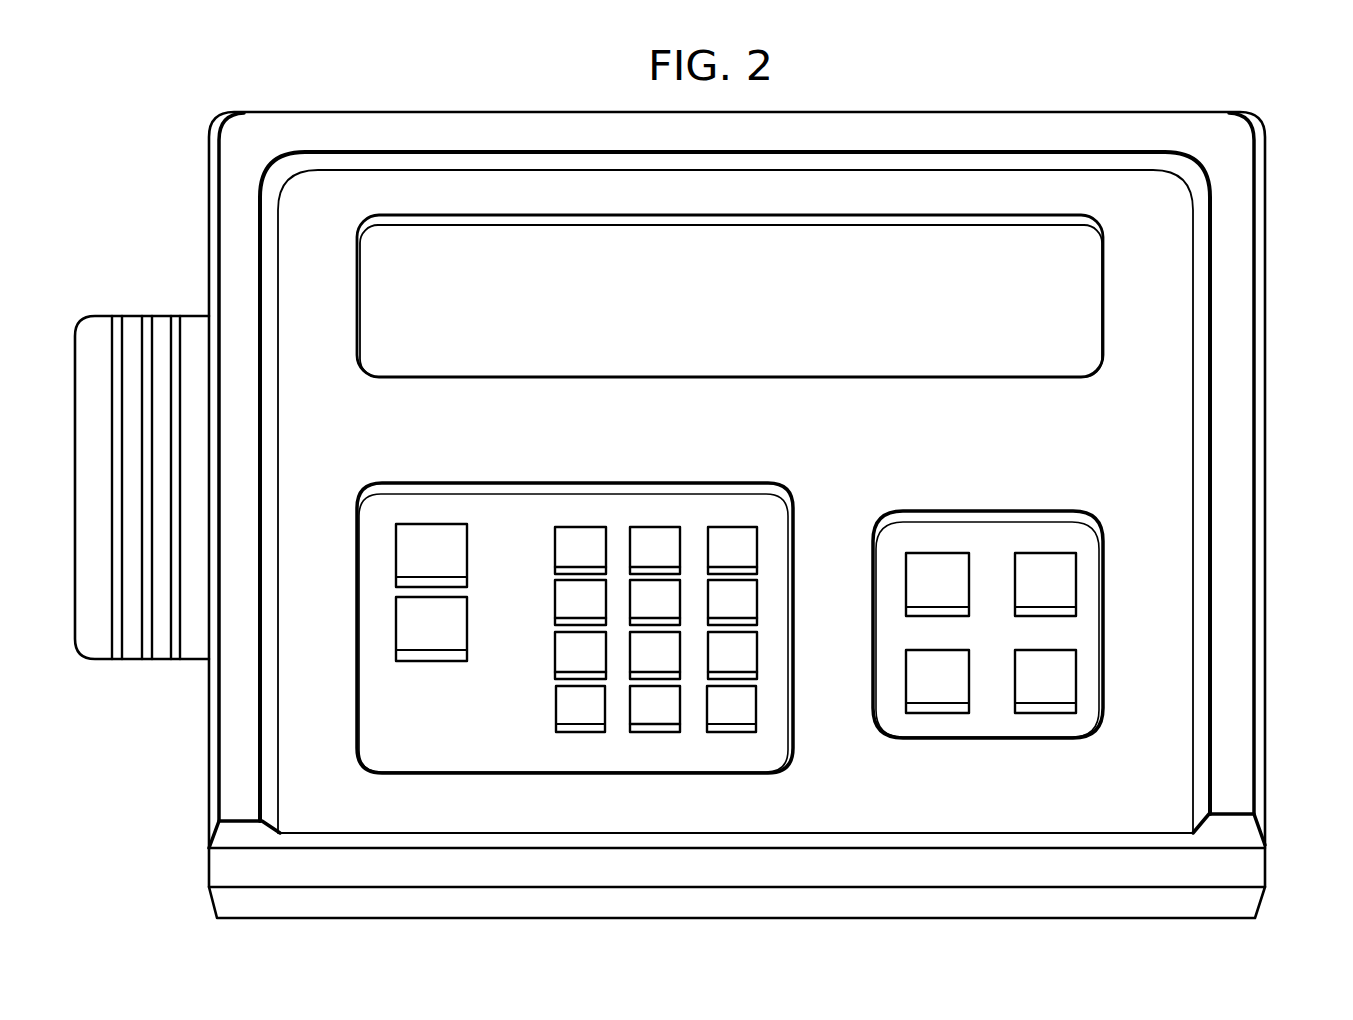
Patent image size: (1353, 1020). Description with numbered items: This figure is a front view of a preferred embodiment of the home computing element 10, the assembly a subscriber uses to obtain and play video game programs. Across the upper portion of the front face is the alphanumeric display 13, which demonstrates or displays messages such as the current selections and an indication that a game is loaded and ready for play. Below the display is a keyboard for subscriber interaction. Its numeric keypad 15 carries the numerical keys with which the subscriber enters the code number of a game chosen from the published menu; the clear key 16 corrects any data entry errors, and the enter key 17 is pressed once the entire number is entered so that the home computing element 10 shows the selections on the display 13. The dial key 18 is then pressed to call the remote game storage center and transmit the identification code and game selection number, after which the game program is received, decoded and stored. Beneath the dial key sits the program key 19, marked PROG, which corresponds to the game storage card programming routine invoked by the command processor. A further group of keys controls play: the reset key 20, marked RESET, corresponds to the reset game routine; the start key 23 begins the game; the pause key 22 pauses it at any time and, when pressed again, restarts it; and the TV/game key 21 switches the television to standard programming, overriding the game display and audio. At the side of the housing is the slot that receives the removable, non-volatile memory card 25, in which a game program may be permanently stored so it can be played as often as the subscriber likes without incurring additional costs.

The home computing element 10 is at (1266, 190).
The alphanumeric display 13 is at (1010, 377).
The numeric keypad 15 is at (655, 732).
The clear key 16 is at (556, 705).
The enter key 17 is at (733, 732).
The dial key 18 is at (396, 548).
The program key 19 is at (396, 626).
The reset button 20 is at (906, 582).
The TV/game key 21 is at (1076, 585).
The pause key 22 is at (1045, 713).
The start key 23 is at (935, 713).
The memory card 25 is at (75, 620).